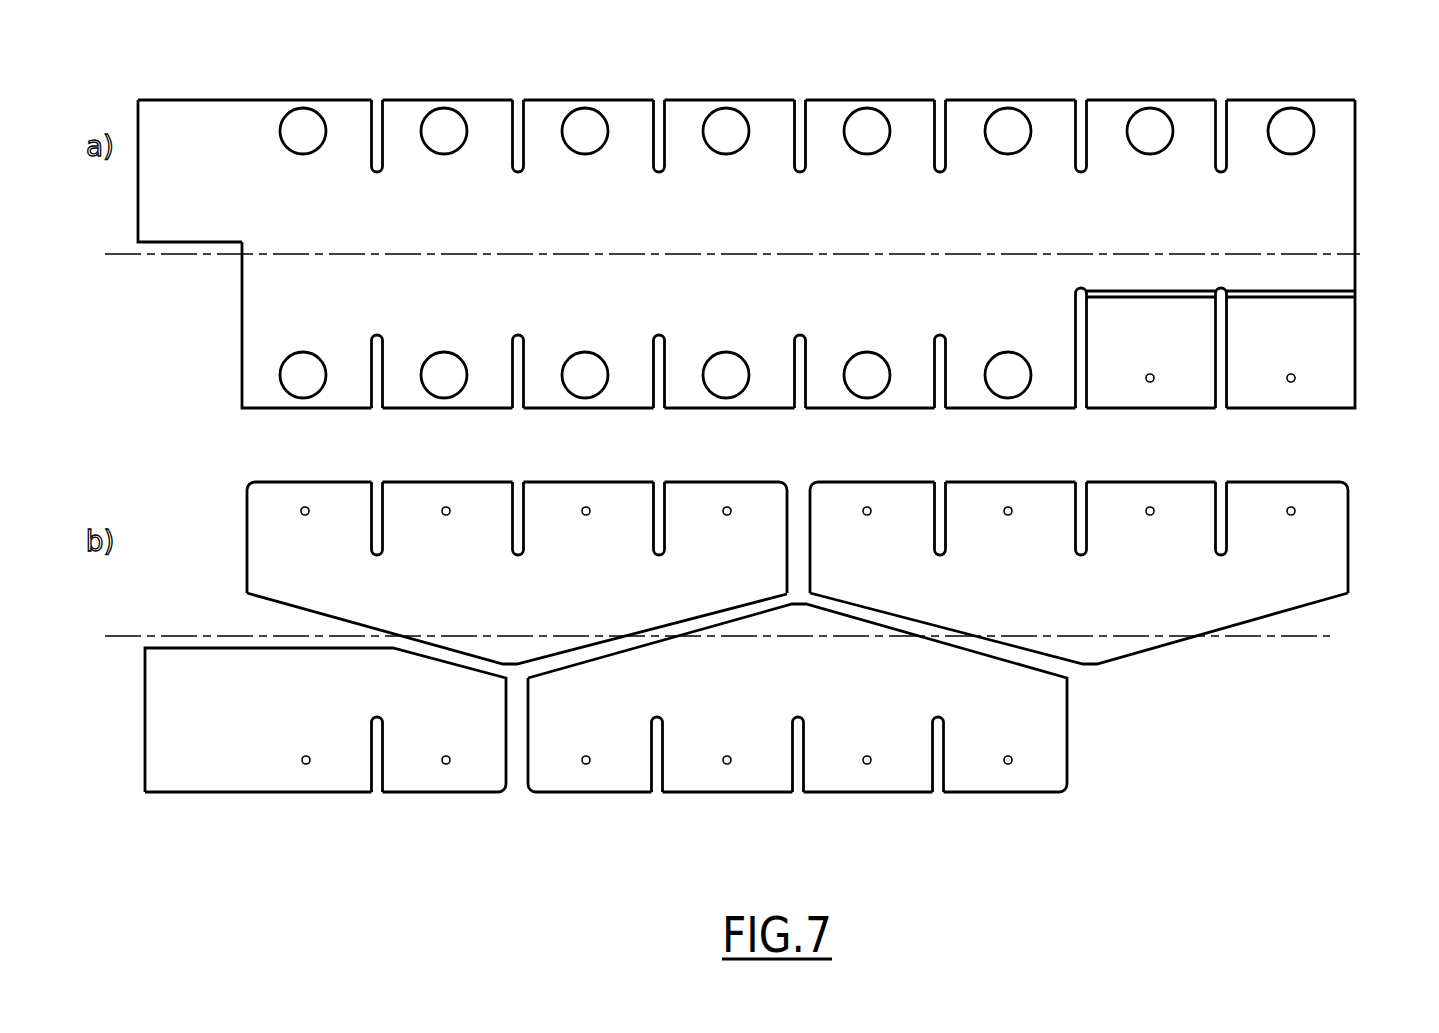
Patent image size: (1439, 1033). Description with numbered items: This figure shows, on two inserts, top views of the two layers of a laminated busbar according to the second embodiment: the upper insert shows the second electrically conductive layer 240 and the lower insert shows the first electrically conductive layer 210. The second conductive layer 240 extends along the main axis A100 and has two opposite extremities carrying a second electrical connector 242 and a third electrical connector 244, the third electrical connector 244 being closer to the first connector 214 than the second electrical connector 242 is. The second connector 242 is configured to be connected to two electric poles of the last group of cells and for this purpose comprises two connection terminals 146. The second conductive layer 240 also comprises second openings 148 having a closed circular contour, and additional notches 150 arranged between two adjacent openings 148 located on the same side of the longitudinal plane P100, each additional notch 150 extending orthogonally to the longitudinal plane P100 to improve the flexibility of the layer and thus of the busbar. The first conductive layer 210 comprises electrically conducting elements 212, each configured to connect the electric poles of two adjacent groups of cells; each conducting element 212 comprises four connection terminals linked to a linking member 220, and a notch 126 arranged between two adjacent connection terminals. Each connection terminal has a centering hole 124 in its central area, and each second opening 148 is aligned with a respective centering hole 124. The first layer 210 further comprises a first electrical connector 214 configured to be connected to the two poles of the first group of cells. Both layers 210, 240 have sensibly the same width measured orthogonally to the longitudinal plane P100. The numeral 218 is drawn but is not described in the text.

The second electrically conductive layer 240 is at (1380, 165).
The third electrical connector 244 is at (173, 167).
The additional notches 150 is at (375, 95).
The second openings 148 is at (588, 368).
The second electrical connector 242 is at (1392, 410).
The connection terminals 146 is at (1320, 388).
The main axis A100 is at (766, 427).
The longitudinal plane P100 is at (766, 464).
The first electrically conductive layer 210 is at (1375, 529).
The linking member 220 is at (1110, 607).
The electrically conducting element 212 is at (763, 670).
The tabs 218 is at (910, 497).
The first electrical connector 214 is at (189, 703).
The notch 126 is at (658, 795).
The centering hole 124 is at (878, 758).